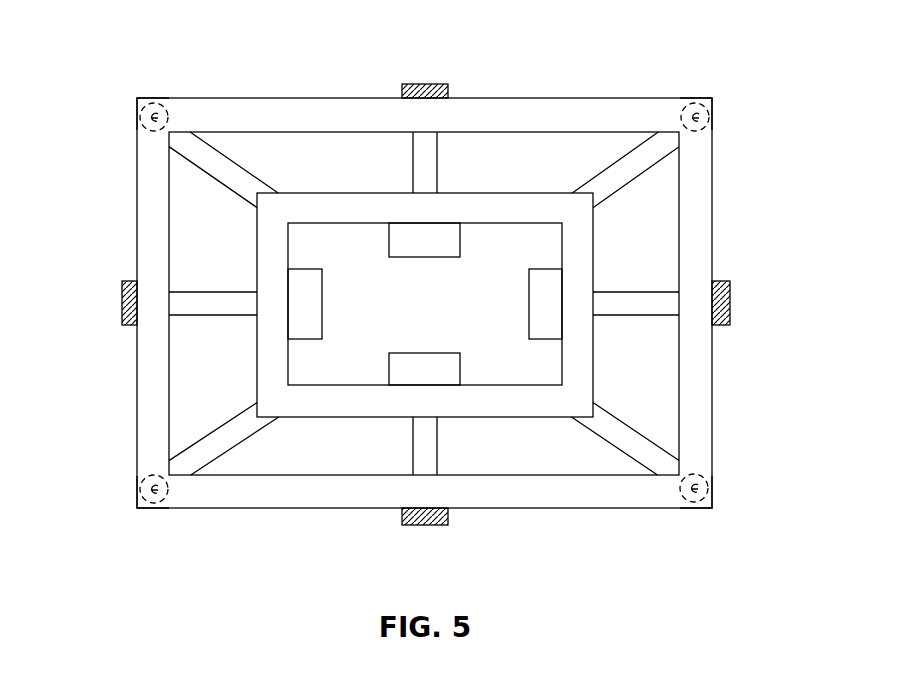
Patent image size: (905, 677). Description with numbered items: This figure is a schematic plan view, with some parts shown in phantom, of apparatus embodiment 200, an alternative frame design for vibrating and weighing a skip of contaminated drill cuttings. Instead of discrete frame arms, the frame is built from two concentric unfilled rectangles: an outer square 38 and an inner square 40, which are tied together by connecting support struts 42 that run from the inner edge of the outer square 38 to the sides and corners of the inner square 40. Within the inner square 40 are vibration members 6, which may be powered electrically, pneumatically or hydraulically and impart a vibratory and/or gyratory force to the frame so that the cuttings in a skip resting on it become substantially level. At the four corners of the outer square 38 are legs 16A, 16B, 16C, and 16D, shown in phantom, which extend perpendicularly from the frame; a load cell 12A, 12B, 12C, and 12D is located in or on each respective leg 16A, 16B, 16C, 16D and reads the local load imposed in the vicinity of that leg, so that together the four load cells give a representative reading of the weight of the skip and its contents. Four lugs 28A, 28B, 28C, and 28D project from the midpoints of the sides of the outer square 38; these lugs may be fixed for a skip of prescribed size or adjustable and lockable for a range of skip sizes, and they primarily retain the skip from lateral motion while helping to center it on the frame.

The embodiment 200 is at (556, 27).
The outer square 38 is at (705, 204).
The inner square 40 is at (565, 403).
The connecting support struts 42 is at (252, 172).
The vibration member 6 is at (322, 302).
The load cell 12A is at (720, 106).
The load cell 12B is at (712, 481).
The load cell 12C is at (135, 481).
The load cell 12D is at (135, 110).
The leg 16A is at (673, 105).
The leg 16B is at (670, 506).
The leg 16C is at (170, 506).
The leg 16D is at (162, 102).
The lug 28A is at (432, 84).
The lug 28B is at (730, 303).
The lug 28C is at (425, 525).
The lug 28D is at (122, 303).